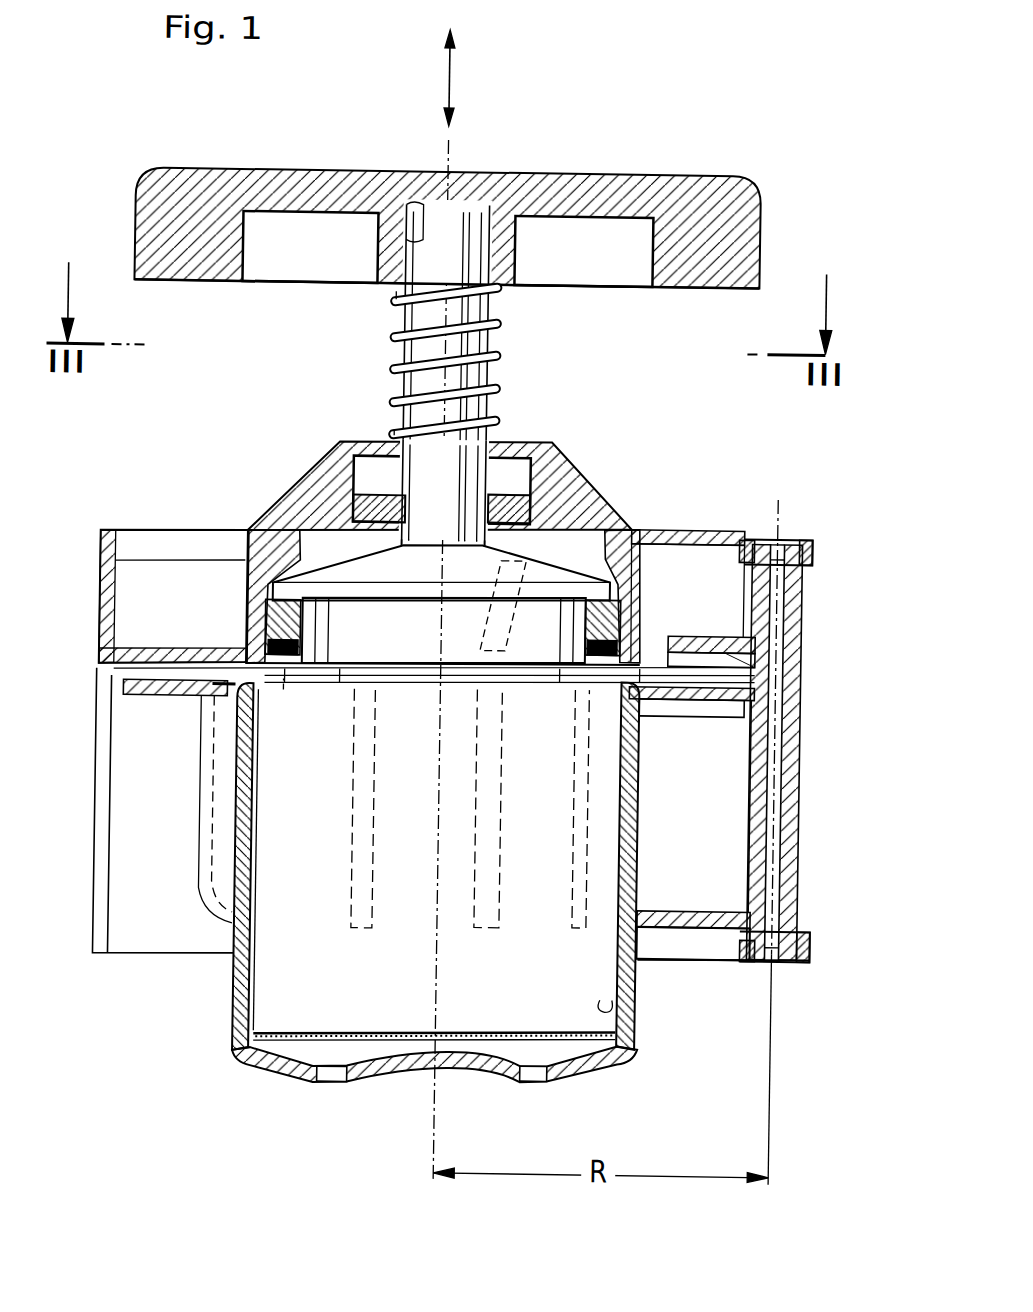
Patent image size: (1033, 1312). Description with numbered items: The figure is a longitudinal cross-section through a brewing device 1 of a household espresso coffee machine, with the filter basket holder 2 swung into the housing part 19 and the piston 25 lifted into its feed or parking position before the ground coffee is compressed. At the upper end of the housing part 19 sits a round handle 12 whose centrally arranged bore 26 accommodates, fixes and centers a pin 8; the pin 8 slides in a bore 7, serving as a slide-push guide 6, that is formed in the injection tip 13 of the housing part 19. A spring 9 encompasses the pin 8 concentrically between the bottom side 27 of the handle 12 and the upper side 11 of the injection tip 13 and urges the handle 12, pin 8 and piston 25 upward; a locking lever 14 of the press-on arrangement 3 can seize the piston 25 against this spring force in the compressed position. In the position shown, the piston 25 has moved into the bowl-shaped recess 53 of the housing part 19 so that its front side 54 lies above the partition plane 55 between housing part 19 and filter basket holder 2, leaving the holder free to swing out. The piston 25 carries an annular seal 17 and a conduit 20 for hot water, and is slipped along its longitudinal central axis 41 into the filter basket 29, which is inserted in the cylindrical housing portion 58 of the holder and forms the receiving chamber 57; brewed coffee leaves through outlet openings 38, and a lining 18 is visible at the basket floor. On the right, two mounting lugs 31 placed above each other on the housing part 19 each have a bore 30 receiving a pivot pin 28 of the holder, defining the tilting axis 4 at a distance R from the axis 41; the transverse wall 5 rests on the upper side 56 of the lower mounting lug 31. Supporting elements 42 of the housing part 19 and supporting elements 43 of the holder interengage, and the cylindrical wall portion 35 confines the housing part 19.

The brewing device 1 is at (135, 505).
The filter basket holder 2 is at (802, 777).
The press-on arrangement 3 is at (766, 179).
The tilting axis 4 is at (776, 511).
The transverse wall 5 is at (710, 931).
The slide-push guide 6 is at (492, 436).
The bore 7 is at (389, 413).
The pin 8 is at (486, 339).
The spring 9 is at (391, 334).
The upper side of the injection tip 11 is at (445, 525).
The handle 12 is at (562, 184).
The injection tip 13 is at (342, 471).
The locking lever 14 is at (502, 490).
The seal 17 is at (269, 638).
The bottom liner 18 is at (295, 1029).
The housing part 19 is at (99, 602).
The conduit 20 is at (490, 634).
The piston 25 is at (392, 647).
The bore 26 is at (413, 230).
The bottom side of the handle 27 is at (707, 288).
The pivot pins 28 is at (789, 536).
The filter basket 29 is at (624, 1000).
The bore 30 is at (742, 546).
The mounting lugs 31 is at (811, 550).
The wall portion 35 is at (103, 837).
The outlet openings 38 is at (338, 1084).
The longitudinal central axis 41 is at (441, 152).
The supporting elements 42 is at (745, 658).
The supporting elements 43 is at (715, 639).
The bowl-shaped recess 53 is at (269, 605).
The front side 54 is at (337, 690).
The partition plane 55 is at (284, 694).
The upper side of the lower mounting lug 56 is at (748, 921).
The receiving chamber 57 is at (292, 810).
The housing portion 58 is at (243, 873).